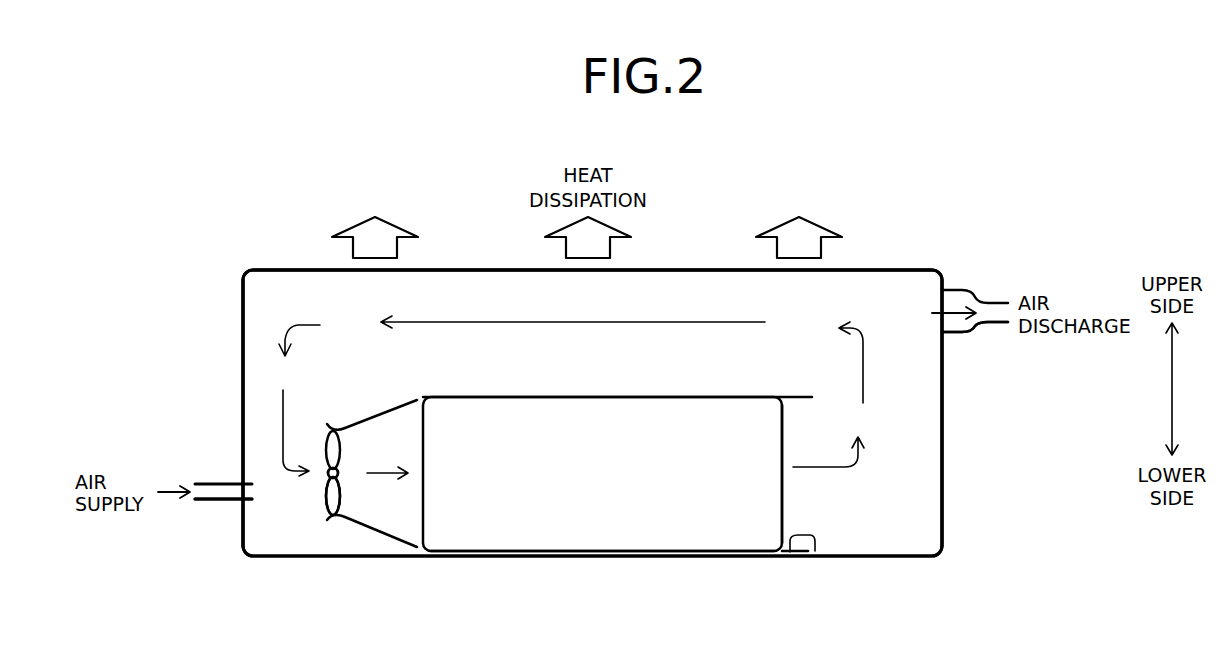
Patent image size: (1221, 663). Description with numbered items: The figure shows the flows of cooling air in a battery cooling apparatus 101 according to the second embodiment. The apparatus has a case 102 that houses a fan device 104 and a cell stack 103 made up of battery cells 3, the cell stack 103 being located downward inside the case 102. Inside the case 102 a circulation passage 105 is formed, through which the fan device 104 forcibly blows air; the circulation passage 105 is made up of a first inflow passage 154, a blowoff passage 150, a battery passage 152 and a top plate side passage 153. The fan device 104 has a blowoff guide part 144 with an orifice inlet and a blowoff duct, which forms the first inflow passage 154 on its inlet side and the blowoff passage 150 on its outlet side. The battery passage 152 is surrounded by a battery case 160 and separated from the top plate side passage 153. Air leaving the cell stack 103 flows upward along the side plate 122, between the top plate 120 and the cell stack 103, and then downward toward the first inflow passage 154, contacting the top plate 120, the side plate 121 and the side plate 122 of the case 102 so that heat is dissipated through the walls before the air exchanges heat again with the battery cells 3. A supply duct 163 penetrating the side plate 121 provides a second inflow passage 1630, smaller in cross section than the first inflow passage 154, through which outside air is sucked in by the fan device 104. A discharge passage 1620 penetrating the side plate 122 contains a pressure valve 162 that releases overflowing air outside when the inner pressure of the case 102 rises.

The battery cooling apparatus 101 is at (878, 213).
The case 102 is at (903, 263).
The cell stack 103 is at (599, 545).
The battery cells 3 is at (543, 545).
The fan device 104 is at (324, 506).
The circulation passage 105 is at (305, 307).
The top plate 120 is at (688, 272).
The side plate 121 is at (243, 348).
The side plate 122 is at (943, 434).
The blowoff guide part 144 is at (390, 540).
The blowoff passage 150 is at (348, 488).
The battery passage 152 is at (782, 512).
The top plate side passage 153 is at (483, 283).
The first inflow passage 154 is at (316, 483).
The battery case 160 is at (815, 551).
The pressure valve 162 is at (986, 285).
The discharge passage 1620 is at (962, 333).
The supply duct 163 is at (213, 483).
The second inflow passage 1630 is at (243, 497).